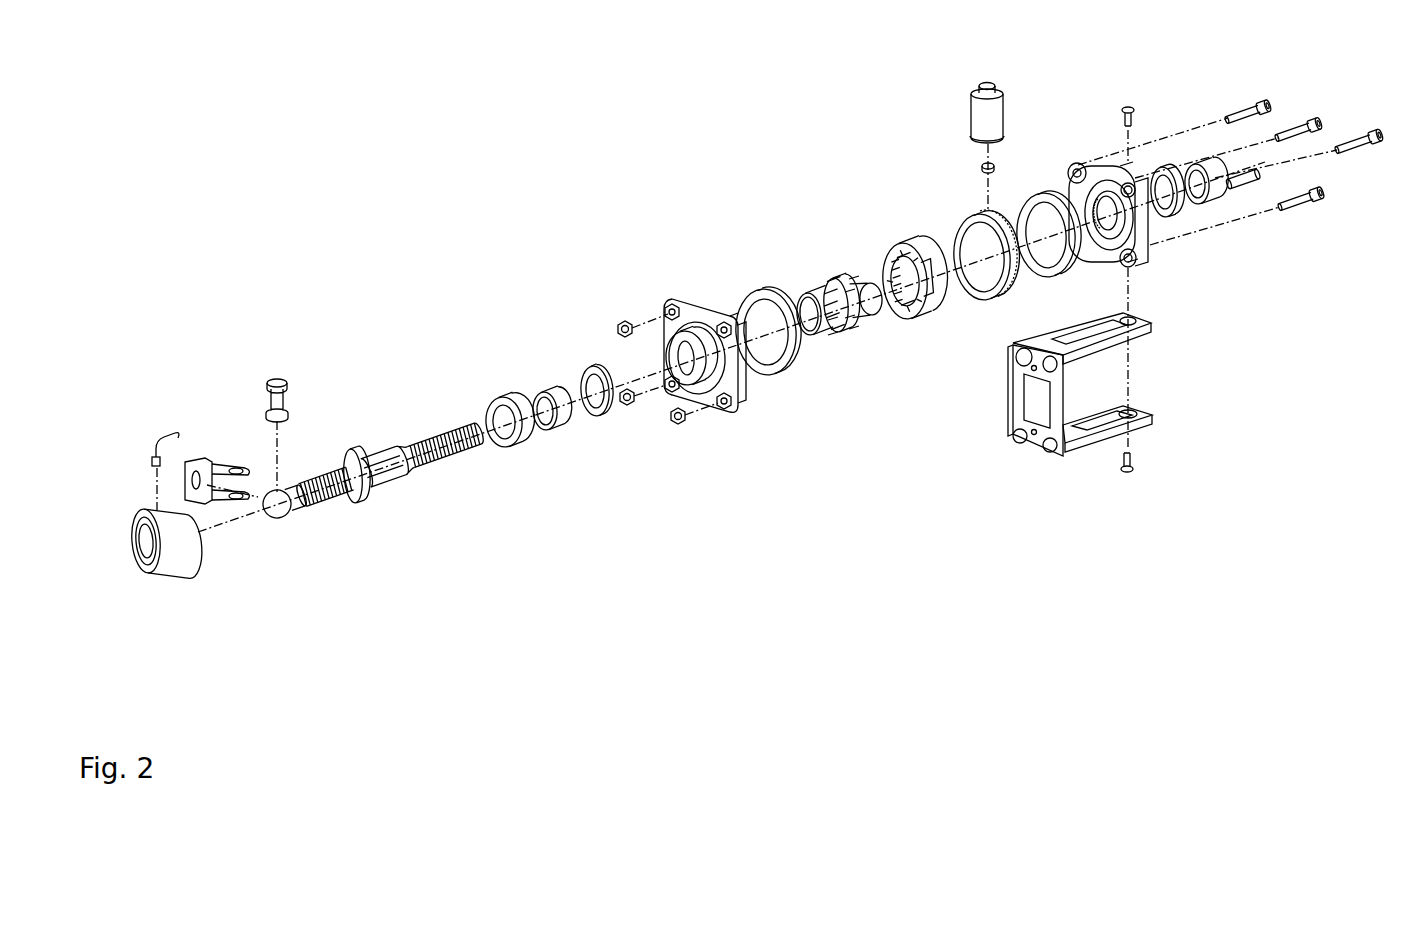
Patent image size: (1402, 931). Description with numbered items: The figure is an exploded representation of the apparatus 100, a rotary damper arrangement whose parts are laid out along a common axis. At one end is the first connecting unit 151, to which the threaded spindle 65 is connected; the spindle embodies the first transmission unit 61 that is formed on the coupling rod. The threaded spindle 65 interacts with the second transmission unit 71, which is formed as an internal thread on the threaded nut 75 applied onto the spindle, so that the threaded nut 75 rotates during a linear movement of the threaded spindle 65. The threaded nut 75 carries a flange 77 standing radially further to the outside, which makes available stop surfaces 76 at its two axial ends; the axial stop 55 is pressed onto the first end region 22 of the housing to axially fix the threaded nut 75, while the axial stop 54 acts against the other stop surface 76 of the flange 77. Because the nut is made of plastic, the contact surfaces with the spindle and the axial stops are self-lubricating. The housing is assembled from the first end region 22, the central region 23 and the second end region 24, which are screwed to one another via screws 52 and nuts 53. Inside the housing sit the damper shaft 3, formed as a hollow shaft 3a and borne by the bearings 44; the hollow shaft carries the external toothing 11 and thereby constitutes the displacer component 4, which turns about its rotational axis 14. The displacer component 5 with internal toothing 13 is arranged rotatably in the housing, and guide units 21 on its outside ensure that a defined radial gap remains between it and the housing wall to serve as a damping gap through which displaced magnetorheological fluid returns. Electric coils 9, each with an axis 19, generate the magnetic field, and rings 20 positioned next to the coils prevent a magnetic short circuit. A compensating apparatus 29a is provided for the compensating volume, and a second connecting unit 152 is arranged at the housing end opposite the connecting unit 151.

The apparatus 100 is at (478, 159).
The connecting unit 151 is at (200, 456).
The axial stop 55 is at (185, 556).
The threaded nut 75 is at (366, 447).
The stop surface 76 is at (352, 492).
The flange 77 is at (360, 500).
The second transmission unit 71 is at (398, 480).
The first transmission unit 61 is at (450, 462).
The threaded spindle 65 is at (382, 466).
The axial stop 54 is at (510, 397).
The bearing 44 is at (567, 413).
The ring 20 is at (590, 373).
The axis of electric coil 19 is at (630, 380).
The rotational axis of displacer component 14 is at (638, 378).
The nut 53 is at (680, 420).
The first end region 22 is at (680, 305).
The electric coil 9 is at (765, 290).
The damper shaft 3 is at (854, 298).
The external toothing 11 is at (840, 278).
The internal toothing 13 is at (886, 274).
The displacer component 4 is at (845, 347).
The hollow shaft 3a is at (877, 318).
The displacer component 5 is at (927, 264).
The guide unit 21 is at (935, 300).
The central region 23 is at (962, 238).
The compensating apparatus 29a is at (977, 112).
The second end region 24 is at (1085, 170).
The screw 52 is at (1296, 215).
The connecting unit 152 is at (1015, 403).